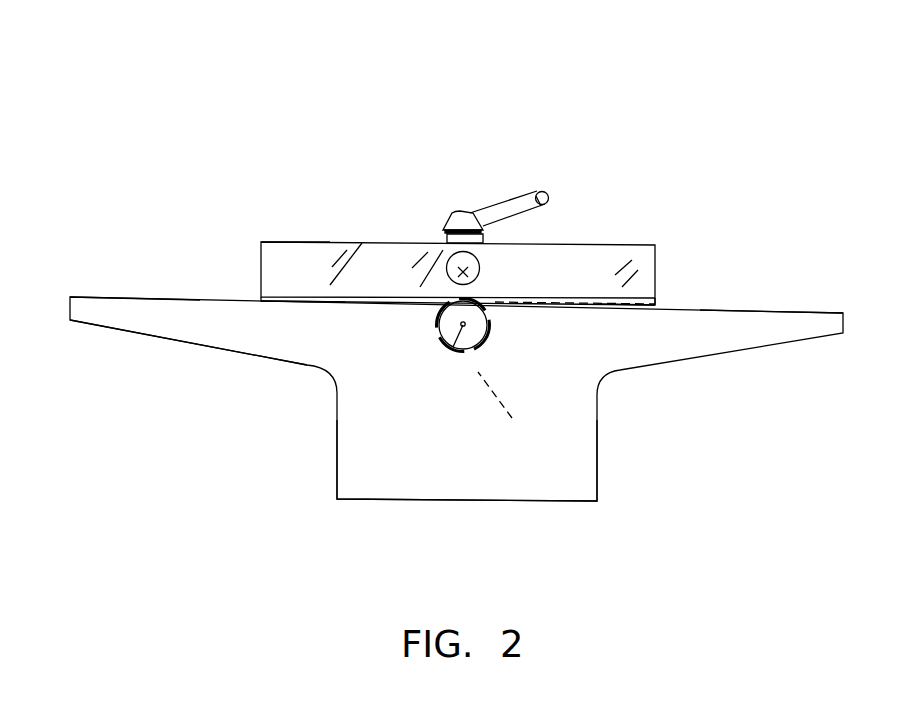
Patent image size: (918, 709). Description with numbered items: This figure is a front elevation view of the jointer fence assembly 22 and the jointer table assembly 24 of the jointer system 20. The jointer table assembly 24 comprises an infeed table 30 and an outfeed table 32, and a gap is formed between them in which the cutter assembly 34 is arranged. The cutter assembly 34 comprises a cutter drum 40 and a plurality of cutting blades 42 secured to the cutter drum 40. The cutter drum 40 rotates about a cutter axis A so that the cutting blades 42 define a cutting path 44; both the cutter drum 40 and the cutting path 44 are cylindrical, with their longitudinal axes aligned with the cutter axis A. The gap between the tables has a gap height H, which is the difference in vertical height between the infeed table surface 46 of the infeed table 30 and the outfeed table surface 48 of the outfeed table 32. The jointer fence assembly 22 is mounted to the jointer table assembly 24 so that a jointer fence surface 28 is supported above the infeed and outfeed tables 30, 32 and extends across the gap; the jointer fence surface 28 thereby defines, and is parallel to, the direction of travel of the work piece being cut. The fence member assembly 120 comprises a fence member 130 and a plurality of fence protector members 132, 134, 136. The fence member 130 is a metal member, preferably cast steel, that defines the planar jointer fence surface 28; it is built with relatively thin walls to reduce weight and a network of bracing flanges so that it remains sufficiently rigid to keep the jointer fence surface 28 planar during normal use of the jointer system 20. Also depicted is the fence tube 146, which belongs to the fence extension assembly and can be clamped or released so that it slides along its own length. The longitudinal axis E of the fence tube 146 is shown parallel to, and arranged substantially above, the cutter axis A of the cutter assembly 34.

The jointer system 20 is at (760, 125).
The jointer fence assembly 22 is at (603, 208).
The jointer table assembly 24 is at (767, 267).
The jointer fence surface 28 is at (613, 250).
The infeed table 30 is at (737, 398).
The outfeed table 32 is at (200, 378).
The cutter assembly 34 is at (462, 352).
The cutter drum 40 is at (472, 326).
The cutting blades 42 is at (438, 330).
The cutting path 44 is at (512, 418).
The infeed table surface 46 is at (812, 312).
The outfeed table surface 48 is at (133, 295).
The fence member assembly 120 is at (687, 263).
The fence member 130 is at (292, 230).
The fence protector member 132 is at (300, 303).
The fence protector member 134 is at (430, 305).
The fence protector member 136 is at (607, 305).
The fence tube 146 is at (482, 256).
The cutter axis A is at (457, 341).
The longitudinal axis of the fence tube E is at (455, 262).
The gap height H is at (570, 270).